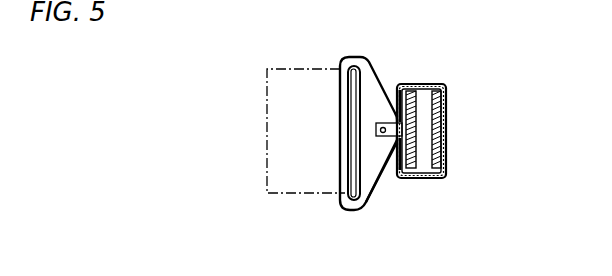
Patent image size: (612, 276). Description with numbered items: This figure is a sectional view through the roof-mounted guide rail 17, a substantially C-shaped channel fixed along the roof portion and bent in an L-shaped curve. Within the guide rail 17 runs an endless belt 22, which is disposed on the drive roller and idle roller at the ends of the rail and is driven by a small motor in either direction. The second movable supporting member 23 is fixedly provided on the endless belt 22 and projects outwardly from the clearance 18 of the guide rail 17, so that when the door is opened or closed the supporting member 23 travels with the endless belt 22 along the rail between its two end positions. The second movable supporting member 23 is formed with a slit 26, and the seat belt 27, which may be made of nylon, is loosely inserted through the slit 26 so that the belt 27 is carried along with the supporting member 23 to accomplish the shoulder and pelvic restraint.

The slit 26 is at (356, 66).
The second movable supporting member 23 is at (378, 96).
The clearance 18 is at (401, 143).
The guide rail 17 is at (445, 95).
The endless belt 22 is at (438, 143).
The belt 27 is at (282, 197).